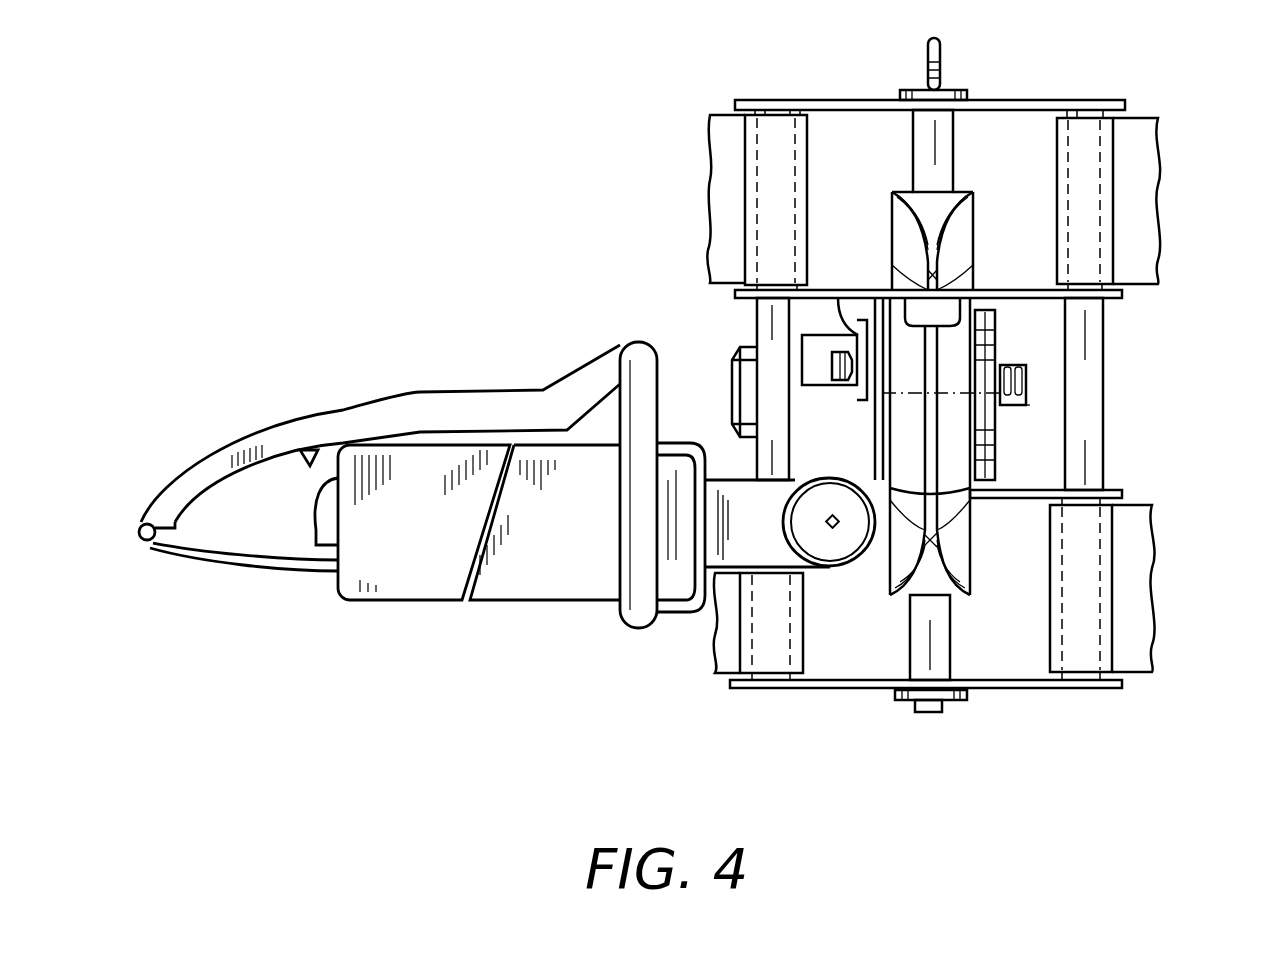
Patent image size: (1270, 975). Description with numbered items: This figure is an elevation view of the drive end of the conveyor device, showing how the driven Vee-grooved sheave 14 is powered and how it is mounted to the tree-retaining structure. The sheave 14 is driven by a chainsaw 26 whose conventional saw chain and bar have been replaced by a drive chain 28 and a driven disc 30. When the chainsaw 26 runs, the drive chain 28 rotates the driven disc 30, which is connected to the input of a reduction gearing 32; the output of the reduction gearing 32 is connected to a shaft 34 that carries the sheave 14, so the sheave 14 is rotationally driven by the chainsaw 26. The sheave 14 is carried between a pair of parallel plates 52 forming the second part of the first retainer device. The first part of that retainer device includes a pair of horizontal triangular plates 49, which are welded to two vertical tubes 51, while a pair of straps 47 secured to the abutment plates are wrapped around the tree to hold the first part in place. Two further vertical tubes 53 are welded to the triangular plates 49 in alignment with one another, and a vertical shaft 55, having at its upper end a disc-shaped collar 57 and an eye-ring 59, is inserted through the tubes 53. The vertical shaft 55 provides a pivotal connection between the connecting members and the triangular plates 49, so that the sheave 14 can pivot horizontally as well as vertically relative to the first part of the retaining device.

The Vee-grooved sheave 14 is at (960, 575).
The chainsaw 26 is at (298, 355).
The drive chain 28 is at (735, 478).
The driven disc 30 is at (843, 508).
The reduction gearing 32 is at (846, 424).
The shaft 34 is at (1013, 405).
The straps 47 is at (1145, 212).
The horizontal triangular plates 49 is at (852, 100).
The vertical tubes 51 is at (760, 312).
The parallel plates 52 is at (722, 147).
The further vertical tubes 53 is at (945, 135).
The shaft 55 is at (925, 712).
The disc-shaped collar 57 is at (958, 92).
The eye-ring 59 is at (942, 44).